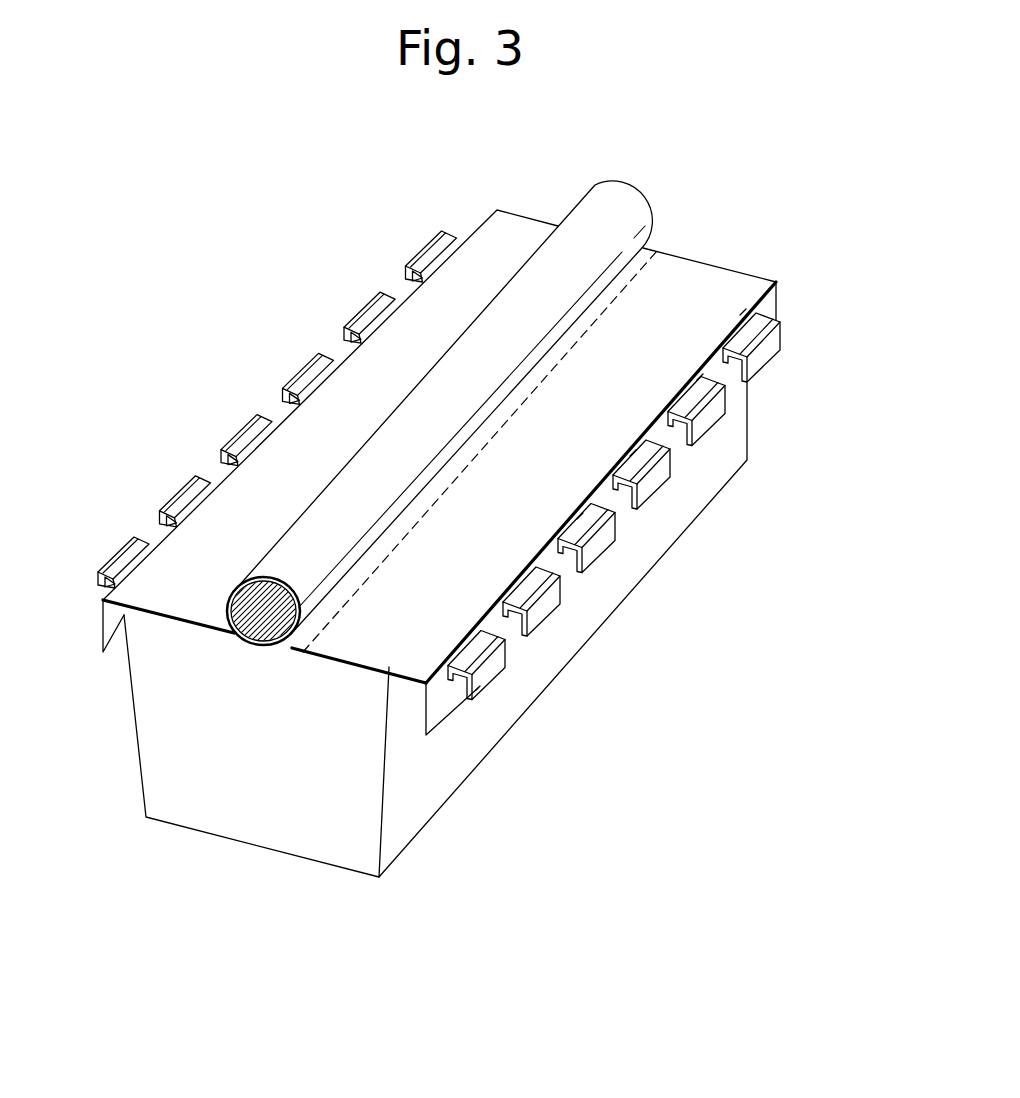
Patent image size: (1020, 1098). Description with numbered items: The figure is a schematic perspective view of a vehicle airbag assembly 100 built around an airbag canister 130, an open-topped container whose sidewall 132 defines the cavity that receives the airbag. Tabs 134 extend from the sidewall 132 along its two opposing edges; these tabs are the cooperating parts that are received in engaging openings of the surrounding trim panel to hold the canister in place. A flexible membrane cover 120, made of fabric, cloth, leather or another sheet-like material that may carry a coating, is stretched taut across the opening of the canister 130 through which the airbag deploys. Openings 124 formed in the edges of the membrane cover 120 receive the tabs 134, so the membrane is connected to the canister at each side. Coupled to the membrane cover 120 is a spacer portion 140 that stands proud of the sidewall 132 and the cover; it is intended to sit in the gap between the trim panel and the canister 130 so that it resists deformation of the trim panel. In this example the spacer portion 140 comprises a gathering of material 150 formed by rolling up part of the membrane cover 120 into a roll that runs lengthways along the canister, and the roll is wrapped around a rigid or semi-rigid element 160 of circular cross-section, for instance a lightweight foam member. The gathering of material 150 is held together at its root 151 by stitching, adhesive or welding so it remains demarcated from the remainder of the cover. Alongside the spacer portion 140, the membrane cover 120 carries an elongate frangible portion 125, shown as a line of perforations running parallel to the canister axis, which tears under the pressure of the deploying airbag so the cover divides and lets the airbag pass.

The vehicle airbag assembly 100 is at (213, 254).
The flexible membrane cover 120 is at (387, 665).
The openings 124 is at (702, 378).
The frangible portion 125 is at (318, 642).
The airbag canister 130 is at (720, 460).
The sidewall 132 is at (625, 572).
The tabs 134 is at (440, 241).
The spacer portion 140 is at (613, 205).
The gathering of material 150 is at (238, 620).
The root 151 is at (266, 637).
The rigid or semi-rigid element 160 is at (247, 624).